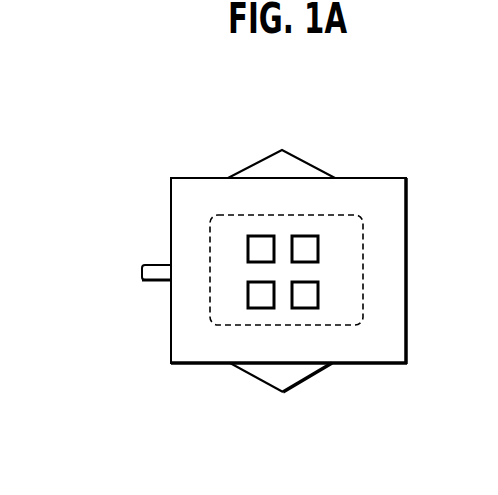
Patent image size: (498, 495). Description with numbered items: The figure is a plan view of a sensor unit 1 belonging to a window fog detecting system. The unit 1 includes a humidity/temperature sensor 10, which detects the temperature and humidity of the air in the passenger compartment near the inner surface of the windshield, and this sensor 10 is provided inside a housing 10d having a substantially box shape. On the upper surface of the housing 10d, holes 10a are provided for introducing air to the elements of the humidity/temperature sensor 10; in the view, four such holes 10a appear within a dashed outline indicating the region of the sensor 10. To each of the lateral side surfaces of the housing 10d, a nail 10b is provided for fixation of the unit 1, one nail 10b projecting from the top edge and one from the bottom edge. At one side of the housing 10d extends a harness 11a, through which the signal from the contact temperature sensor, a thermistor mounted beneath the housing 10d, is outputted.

The sensor unit 1 is at (100, 128).
The humidity/temperature sensor 10 is at (342, 215).
The holes 10a is at (247, 294).
The nail 10b is at (267, 158).
The housing 10d is at (178, 177).
The harness 11a is at (152, 264).